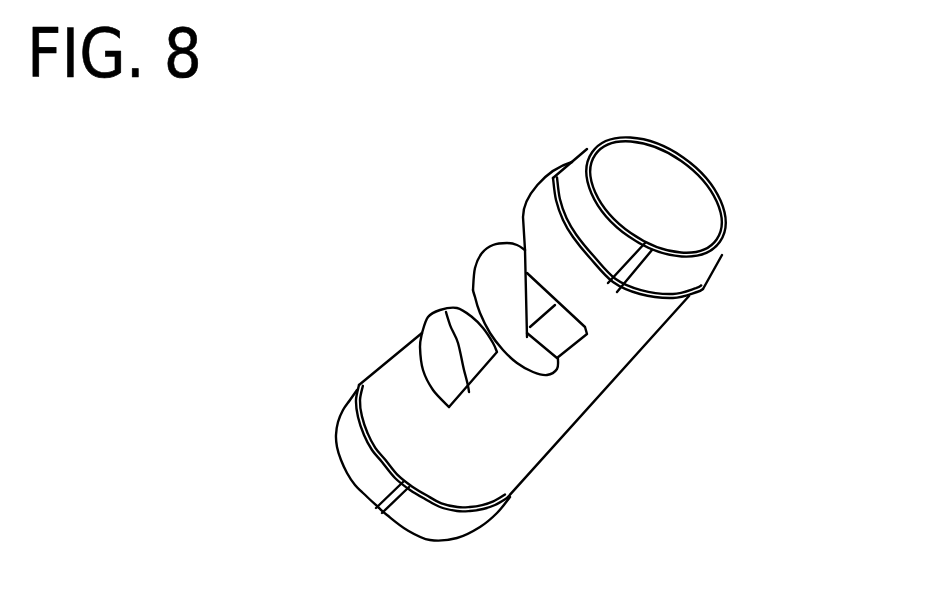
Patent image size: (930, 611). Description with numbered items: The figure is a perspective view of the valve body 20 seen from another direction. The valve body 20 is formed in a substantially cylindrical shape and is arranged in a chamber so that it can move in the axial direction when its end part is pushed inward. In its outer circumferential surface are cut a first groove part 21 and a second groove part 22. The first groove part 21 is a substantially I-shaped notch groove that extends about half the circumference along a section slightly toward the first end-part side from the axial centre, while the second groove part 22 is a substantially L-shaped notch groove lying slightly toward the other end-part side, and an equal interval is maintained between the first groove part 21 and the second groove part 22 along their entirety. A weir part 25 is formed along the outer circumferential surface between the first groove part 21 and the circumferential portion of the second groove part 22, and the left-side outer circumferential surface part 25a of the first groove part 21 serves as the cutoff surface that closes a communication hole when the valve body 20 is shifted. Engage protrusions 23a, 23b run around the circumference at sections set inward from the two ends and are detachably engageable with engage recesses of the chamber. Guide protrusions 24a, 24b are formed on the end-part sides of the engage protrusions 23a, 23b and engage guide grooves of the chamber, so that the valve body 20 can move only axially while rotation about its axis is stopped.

The valve body 20 is at (754, 172).
The first groove part 21 is at (534, 357).
The second groove part 22 is at (447, 310).
The engage protrusion 23a is at (693, 302).
The engage protrusion 23b is at (507, 504).
The guide protrusion 24a is at (644, 238).
The guide protrusion 24b is at (378, 510).
The weir part 25 is at (475, 264).
The outer circumferential surface part 25a is at (497, 413).